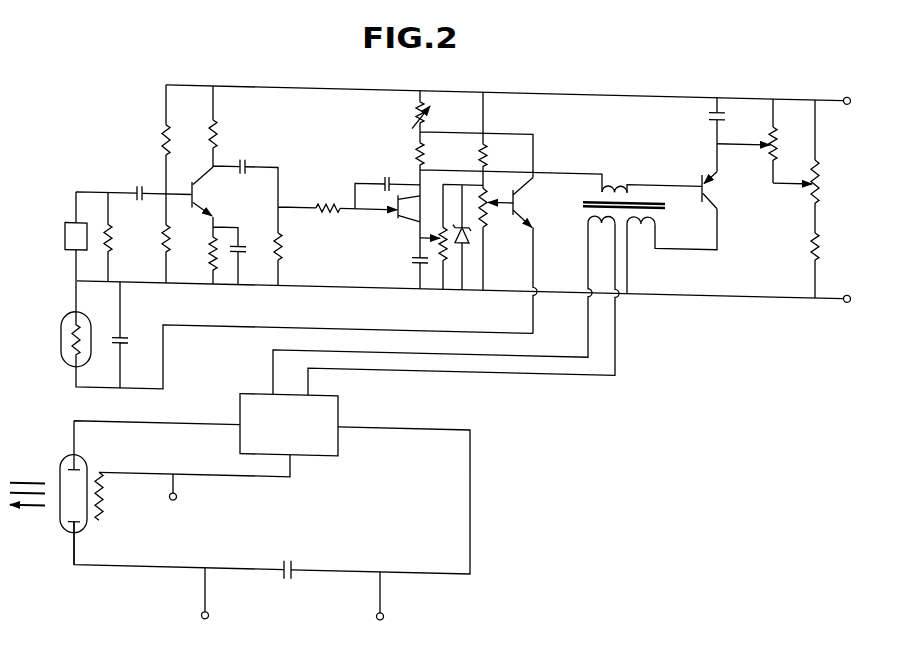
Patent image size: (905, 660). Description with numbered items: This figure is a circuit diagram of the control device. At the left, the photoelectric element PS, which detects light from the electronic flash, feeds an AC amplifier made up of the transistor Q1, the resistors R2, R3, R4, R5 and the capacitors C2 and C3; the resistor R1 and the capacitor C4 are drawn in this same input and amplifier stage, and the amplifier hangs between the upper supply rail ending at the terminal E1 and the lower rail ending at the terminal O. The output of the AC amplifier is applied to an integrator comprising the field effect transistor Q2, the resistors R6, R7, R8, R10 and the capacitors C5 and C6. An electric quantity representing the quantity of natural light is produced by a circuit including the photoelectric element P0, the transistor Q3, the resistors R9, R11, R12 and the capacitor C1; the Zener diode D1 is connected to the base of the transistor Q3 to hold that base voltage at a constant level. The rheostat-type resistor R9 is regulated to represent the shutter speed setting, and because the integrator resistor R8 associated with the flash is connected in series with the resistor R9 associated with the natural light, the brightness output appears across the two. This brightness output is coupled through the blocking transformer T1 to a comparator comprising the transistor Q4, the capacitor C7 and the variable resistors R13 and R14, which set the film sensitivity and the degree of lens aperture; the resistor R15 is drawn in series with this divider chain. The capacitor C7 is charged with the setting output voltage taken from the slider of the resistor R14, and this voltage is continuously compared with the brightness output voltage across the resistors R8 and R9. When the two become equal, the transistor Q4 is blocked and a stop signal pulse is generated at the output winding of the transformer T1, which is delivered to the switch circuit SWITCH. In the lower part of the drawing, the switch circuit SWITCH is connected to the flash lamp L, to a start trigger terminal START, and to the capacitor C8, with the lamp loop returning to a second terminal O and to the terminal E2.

The supply terminal E1 is at (859, 104).
The ground/zero terminal O is at (622, 469).
The supply terminal E2 is at (204, 629).
The photoelectric element PS is at (65, 237).
The resistor R1 is at (118, 237).
The capacitor C2 is at (136, 181).
The resistor R2 is at (176, 140).
The resistor R3 is at (176, 239).
The resistor R4 is at (223, 136).
The transistor Q1 is at (214, 191).
The capacitor C4 is at (252, 177).
The resistor R5 is at (205, 254).
The capacitor C3 is at (244, 264).
The resistor R6 is at (288, 247).
The resistor R7 is at (356, 199).
The capacitor C5 is at (385, 173).
The field effect transistor Q2 is at (404, 220).
The resistor R9 is at (432, 116).
The resistor R8 is at (431, 155).
The resistor R10 is at (434, 241).
The Zener diode D1 is at (469, 240).
The capacitor C6 is at (412, 269).
The resistor R11 is at (498, 156).
The resistor R12 is at (497, 203).
The transistor Q3 is at (532, 202).
The blocking transformer T1 is at (612, 205).
The transistor Q4 is at (720, 190).
The capacitor C7 is at (705, 118).
The variable resistor R14 is at (761, 143).
The variable resistor R13 is at (810, 181).
The resistor R15 is at (829, 247).
The photoelectric element P0 is at (67, 339).
The capacitor C1 is at (130, 335).
The switch circuit SWITCH is at (289, 425).
The flash lamp L is at (56, 509).
The start trigger terminal START is at (202, 507).
The capacitor C8 is at (298, 578).